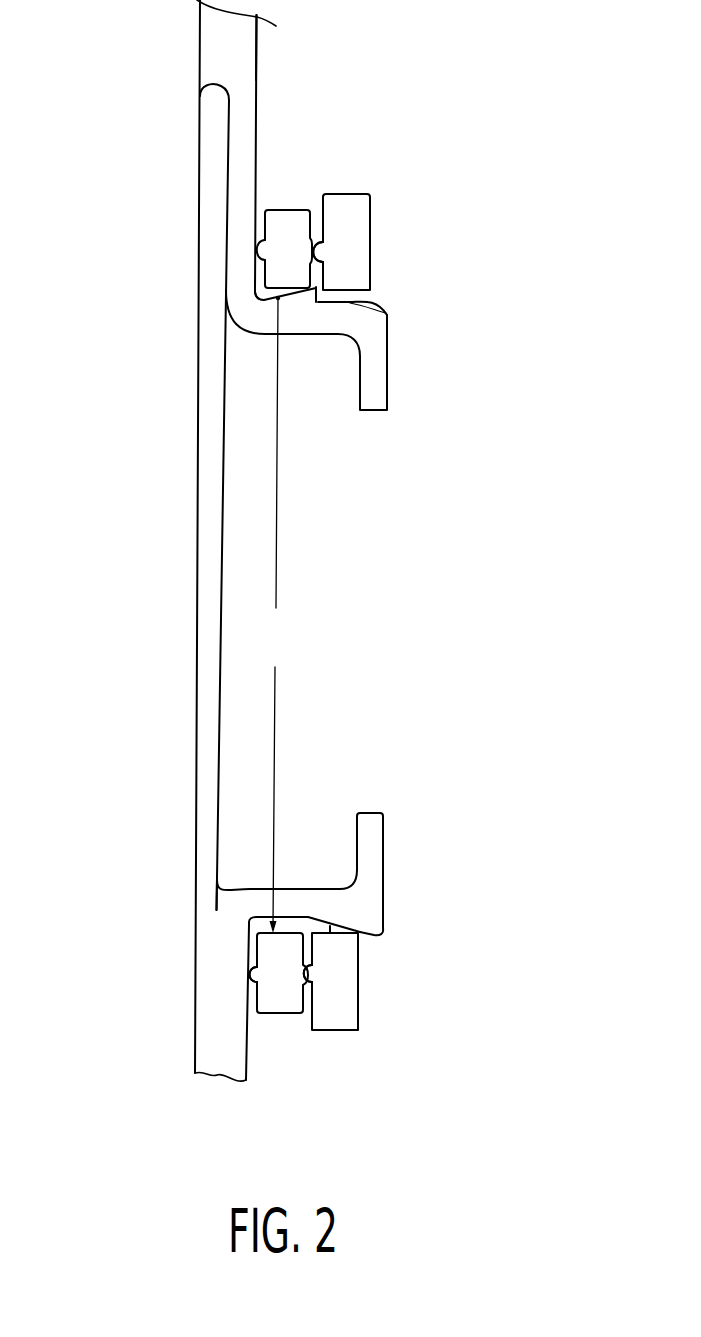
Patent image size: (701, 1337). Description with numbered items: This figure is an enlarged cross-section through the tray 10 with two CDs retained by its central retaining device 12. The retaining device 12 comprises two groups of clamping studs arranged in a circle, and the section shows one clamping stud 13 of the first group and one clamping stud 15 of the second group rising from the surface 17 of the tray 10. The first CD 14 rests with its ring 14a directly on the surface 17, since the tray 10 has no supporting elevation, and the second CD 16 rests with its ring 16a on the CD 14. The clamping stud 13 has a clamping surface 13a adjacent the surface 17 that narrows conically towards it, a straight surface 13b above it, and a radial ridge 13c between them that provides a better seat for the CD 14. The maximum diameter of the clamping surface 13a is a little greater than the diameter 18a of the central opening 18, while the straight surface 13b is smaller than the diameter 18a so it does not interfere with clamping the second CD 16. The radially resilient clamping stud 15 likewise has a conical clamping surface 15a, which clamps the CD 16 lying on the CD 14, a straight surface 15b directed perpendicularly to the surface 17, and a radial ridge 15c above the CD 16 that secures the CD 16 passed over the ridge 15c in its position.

The tray 10 is at (197, 562).
The central retaining device 12 is at (349, 588).
The clamping stud 13 is at (337, 348).
The clamping surface 13a is at (278, 298).
The straight surface 13b is at (385, 313).
The radial ridge 13c is at (316, 290).
The first CD 14 is at (287, 217).
The ring 14a is at (252, 975).
The clamping stud 15 is at (339, 902).
The clamping surface 15a is at (330, 928).
The straight surface 15b is at (287, 917).
The radial ridge 15c is at (372, 937).
The second CD 16 is at (357, 218).
The ring 16a is at (318, 250).
The surface 17 is at (257, 75).
The central opening 18 is at (270, 298).
The diameter 18a is at (277, 615).